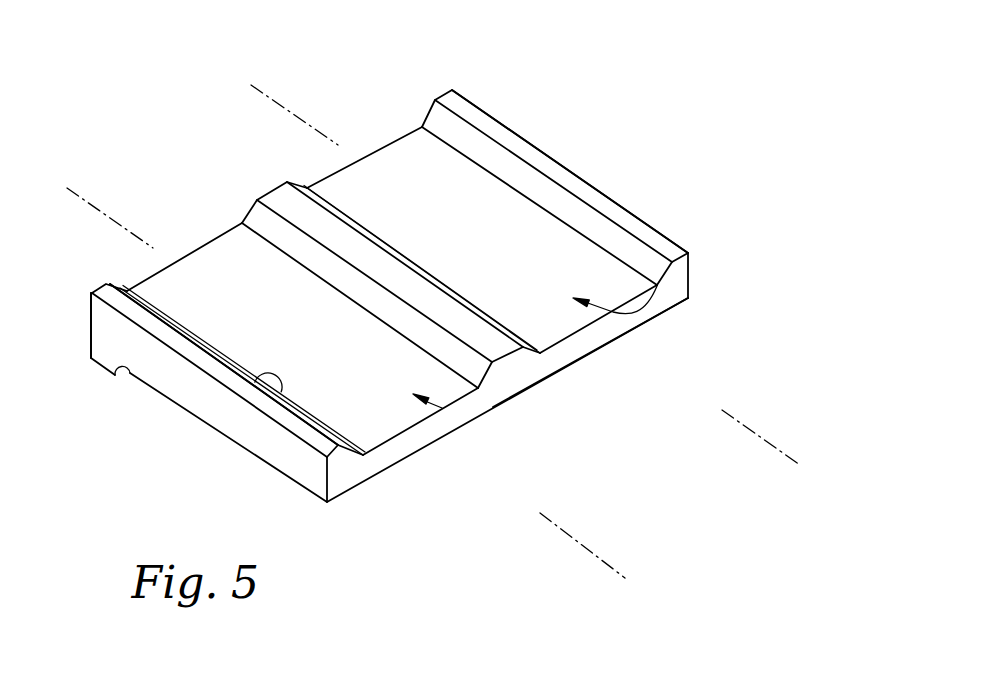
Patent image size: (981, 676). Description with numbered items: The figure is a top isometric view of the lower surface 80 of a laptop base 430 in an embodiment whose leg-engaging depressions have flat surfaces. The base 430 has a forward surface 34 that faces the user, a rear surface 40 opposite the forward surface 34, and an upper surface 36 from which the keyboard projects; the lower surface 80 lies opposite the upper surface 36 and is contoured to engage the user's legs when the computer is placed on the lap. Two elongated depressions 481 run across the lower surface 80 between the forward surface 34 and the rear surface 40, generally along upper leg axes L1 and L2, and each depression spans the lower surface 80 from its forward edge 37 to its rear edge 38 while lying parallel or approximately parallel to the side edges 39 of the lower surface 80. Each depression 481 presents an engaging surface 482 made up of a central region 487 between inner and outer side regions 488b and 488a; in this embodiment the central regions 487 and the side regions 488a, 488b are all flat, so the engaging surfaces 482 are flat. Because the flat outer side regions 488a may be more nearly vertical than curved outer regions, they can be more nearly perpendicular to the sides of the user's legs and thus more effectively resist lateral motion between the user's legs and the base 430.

The forward surface 34 is at (523, 383).
The upper surface 36 is at (655, 316).
The forward edge 37 is at (568, 338).
The rear edge 38 is at (213, 238).
The side edges 39 is at (663, 232).
The rear surface 40 is at (88, 311).
The lower surface 80 is at (618, 212).
The base 430 is at (180, 441).
The depressions 481 is at (365, 138).
The engaging surfaces 482 is at (688, 290).
The central regions 487 is at (533, 220).
The outer side regions 488a is at (468, 138).
The side regions 488b is at (393, 243).
The upper leg axis L1 is at (527, 281).
The upper leg axis L2 is at (345, 383).